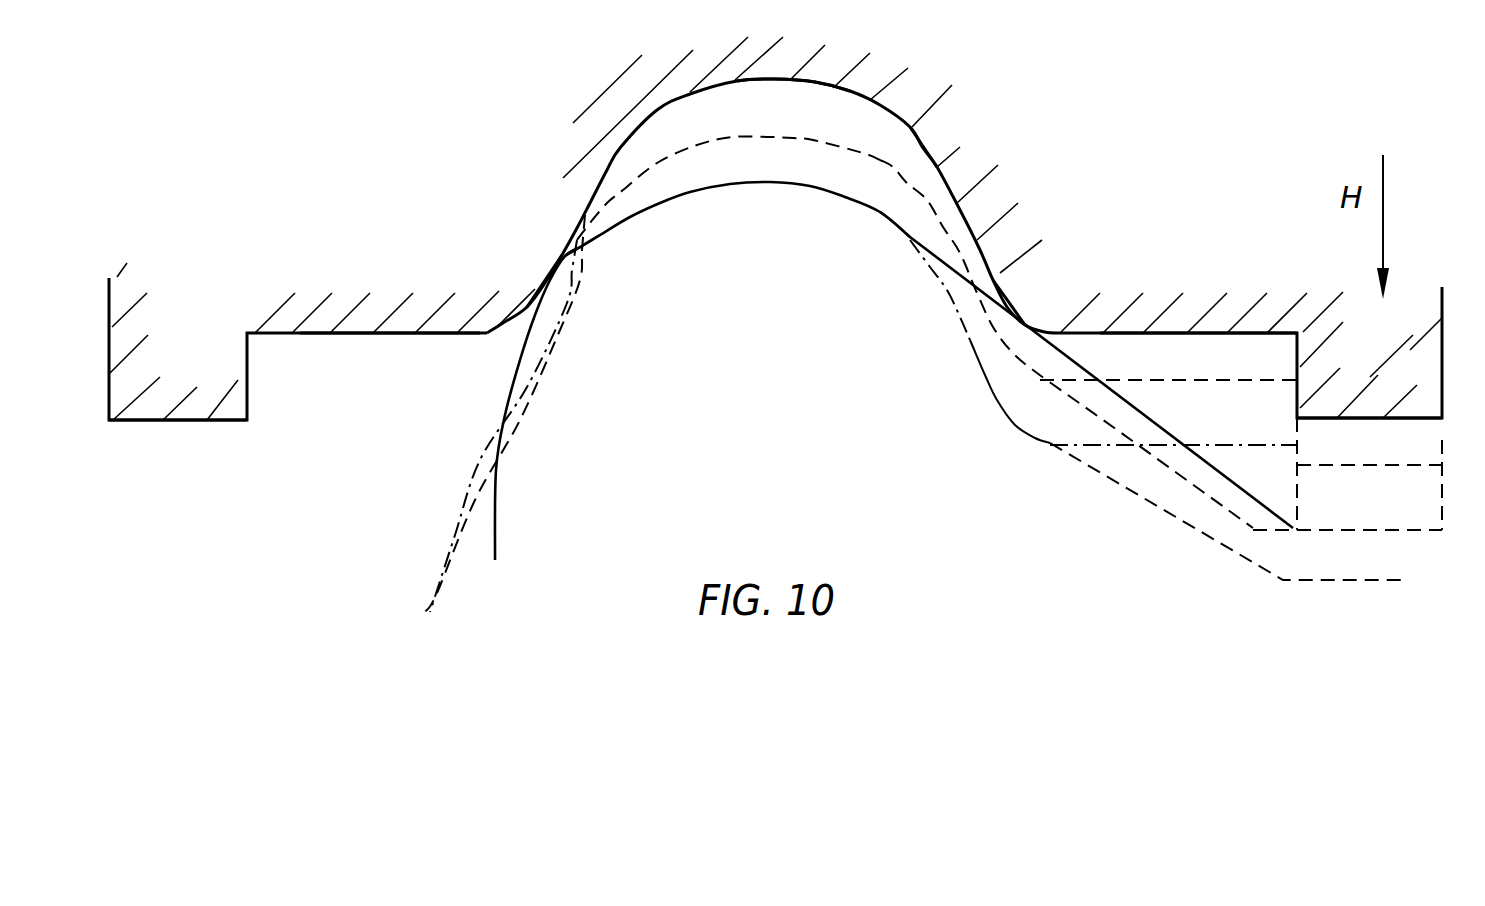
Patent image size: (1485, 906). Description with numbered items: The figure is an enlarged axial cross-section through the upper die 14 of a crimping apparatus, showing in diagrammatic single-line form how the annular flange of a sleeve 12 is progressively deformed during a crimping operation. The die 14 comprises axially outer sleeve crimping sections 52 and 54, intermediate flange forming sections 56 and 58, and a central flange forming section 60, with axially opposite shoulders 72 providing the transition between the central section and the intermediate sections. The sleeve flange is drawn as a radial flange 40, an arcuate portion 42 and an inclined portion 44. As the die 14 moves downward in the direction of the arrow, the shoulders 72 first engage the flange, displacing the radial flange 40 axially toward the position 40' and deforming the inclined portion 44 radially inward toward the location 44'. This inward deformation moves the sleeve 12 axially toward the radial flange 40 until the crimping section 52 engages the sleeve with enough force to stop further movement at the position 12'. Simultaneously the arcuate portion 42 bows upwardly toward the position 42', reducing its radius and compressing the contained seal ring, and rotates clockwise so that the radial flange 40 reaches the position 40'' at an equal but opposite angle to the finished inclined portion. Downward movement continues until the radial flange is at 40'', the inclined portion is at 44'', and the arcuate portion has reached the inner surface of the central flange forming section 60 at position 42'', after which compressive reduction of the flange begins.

The sleeve 12 is at (1243, 455).
The position of the sleeve 12' is at (1228, 520).
The upper die 14 is at (1057, 303).
The radial flange 40 is at (501, 397).
The position of the radial flange 40' is at (487, 426).
The position of the radial flange 40'' is at (482, 413).
The arcuate portion 42 is at (737, 219).
The position of the arcuate portion 42' is at (728, 188).
The position of the arcuate portion 42'' is at (807, 109).
The inclined portion 44 is at (1086, 370).
The location of the inclined portion 44' is at (1066, 344).
The position of the inclined portion 44'' is at (980, 341).
The sleeve crimping section 52 is at (1413, 410).
The sleeve crimping section 54 is at (203, 416).
The intermediate flange forming section 56 is at (1217, 327).
The intermediate flange forming section 58 is at (402, 332).
The central flange forming section 60 is at (920, 138).
The shoulders 72 is at (1020, 300).